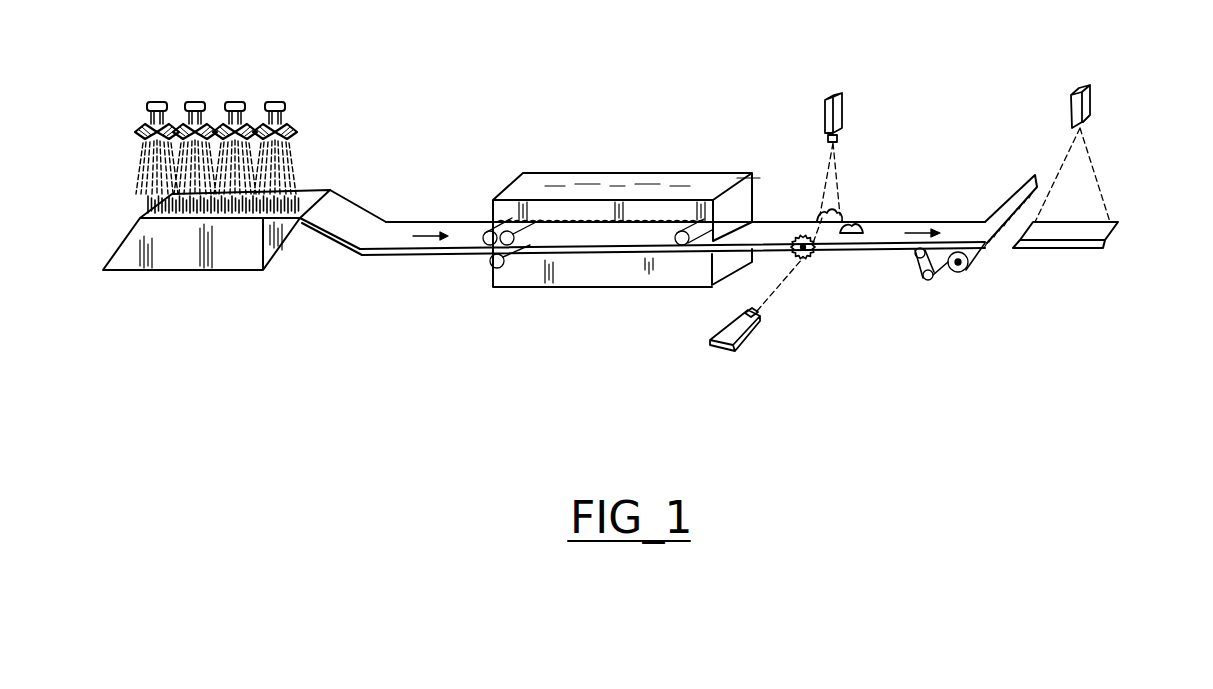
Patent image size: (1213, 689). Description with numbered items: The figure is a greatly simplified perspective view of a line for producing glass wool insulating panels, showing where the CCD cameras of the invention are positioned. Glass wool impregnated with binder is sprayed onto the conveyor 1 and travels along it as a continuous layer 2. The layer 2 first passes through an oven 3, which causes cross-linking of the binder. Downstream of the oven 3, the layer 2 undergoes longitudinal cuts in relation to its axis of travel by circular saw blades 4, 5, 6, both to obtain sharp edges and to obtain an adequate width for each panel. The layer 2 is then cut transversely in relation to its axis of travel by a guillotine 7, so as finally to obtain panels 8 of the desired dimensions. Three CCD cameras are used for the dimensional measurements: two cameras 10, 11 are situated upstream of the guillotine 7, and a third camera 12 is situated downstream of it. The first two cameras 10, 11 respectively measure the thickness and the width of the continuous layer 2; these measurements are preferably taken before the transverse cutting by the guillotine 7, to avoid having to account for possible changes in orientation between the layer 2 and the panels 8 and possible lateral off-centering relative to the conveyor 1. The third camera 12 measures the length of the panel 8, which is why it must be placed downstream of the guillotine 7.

The conveyor 1 is at (383, 257).
The continuous layer 2 is at (466, 228).
The oven 3 is at (755, 170).
The circular saw blade 4 is at (817, 257).
The circular saw blade 5 is at (838, 210).
The circular saw blade 6 is at (867, 227).
The guillotine 7 is at (1013, 197).
The panels 8 is at (1043, 240).
The CCD camera 10 is at (722, 350).
The CCD camera 11 is at (843, 100).
The CCD camera 12 is at (1090, 93).